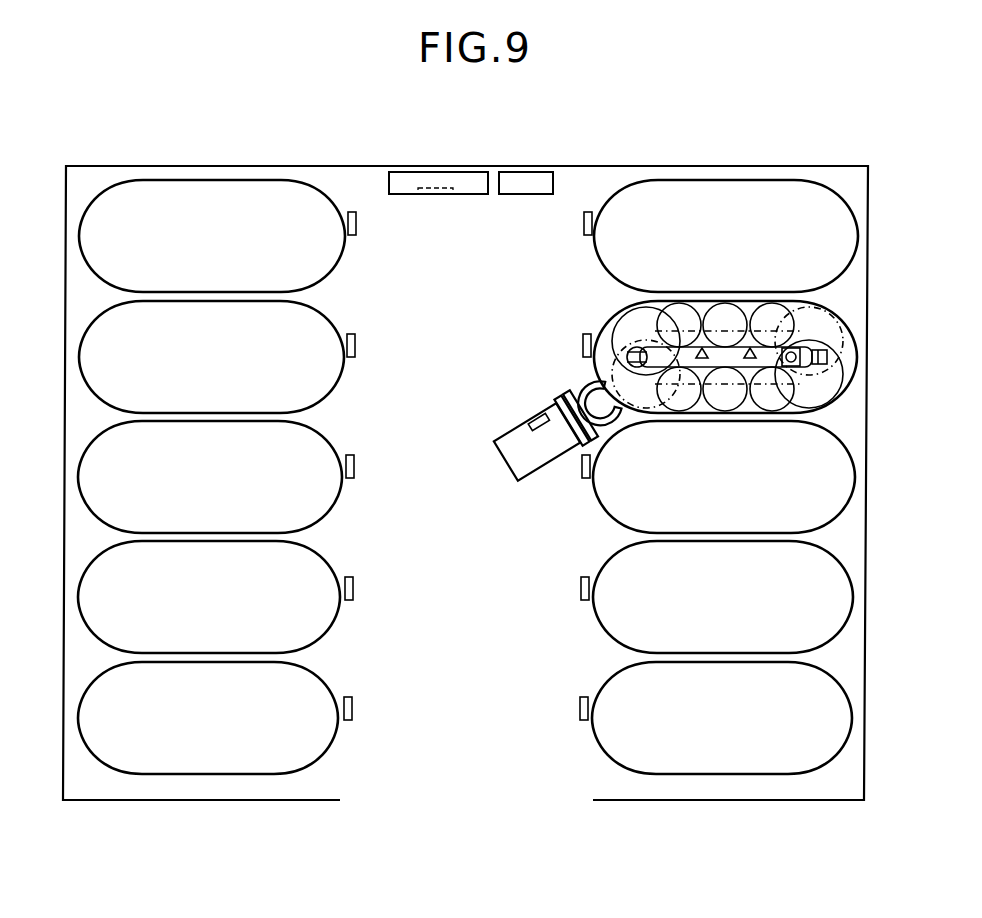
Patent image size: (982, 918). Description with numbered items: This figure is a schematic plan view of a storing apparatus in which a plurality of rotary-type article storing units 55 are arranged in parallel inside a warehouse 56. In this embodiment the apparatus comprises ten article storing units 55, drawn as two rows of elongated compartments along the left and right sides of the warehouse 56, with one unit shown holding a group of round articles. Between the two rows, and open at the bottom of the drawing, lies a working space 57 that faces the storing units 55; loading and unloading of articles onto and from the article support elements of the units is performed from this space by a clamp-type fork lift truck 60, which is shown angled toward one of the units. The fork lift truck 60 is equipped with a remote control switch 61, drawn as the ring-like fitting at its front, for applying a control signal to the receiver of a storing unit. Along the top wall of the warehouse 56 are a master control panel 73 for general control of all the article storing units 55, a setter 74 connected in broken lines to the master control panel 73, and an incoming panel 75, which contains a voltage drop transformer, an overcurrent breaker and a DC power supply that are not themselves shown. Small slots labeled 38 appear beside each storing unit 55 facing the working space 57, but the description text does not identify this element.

The article storing unit 55 is at (743, 181).
The warehouse 56 is at (866, 544).
The working space 57 is at (448, 705).
The slot 38 is at (582, 350).
The clamp-type fork lift truck 60 is at (525, 460).
The remote control switch 61 is at (537, 414).
The master control panel 73 is at (440, 177).
The setter 74 is at (433, 194).
The incoming panel 75 is at (513, 177).